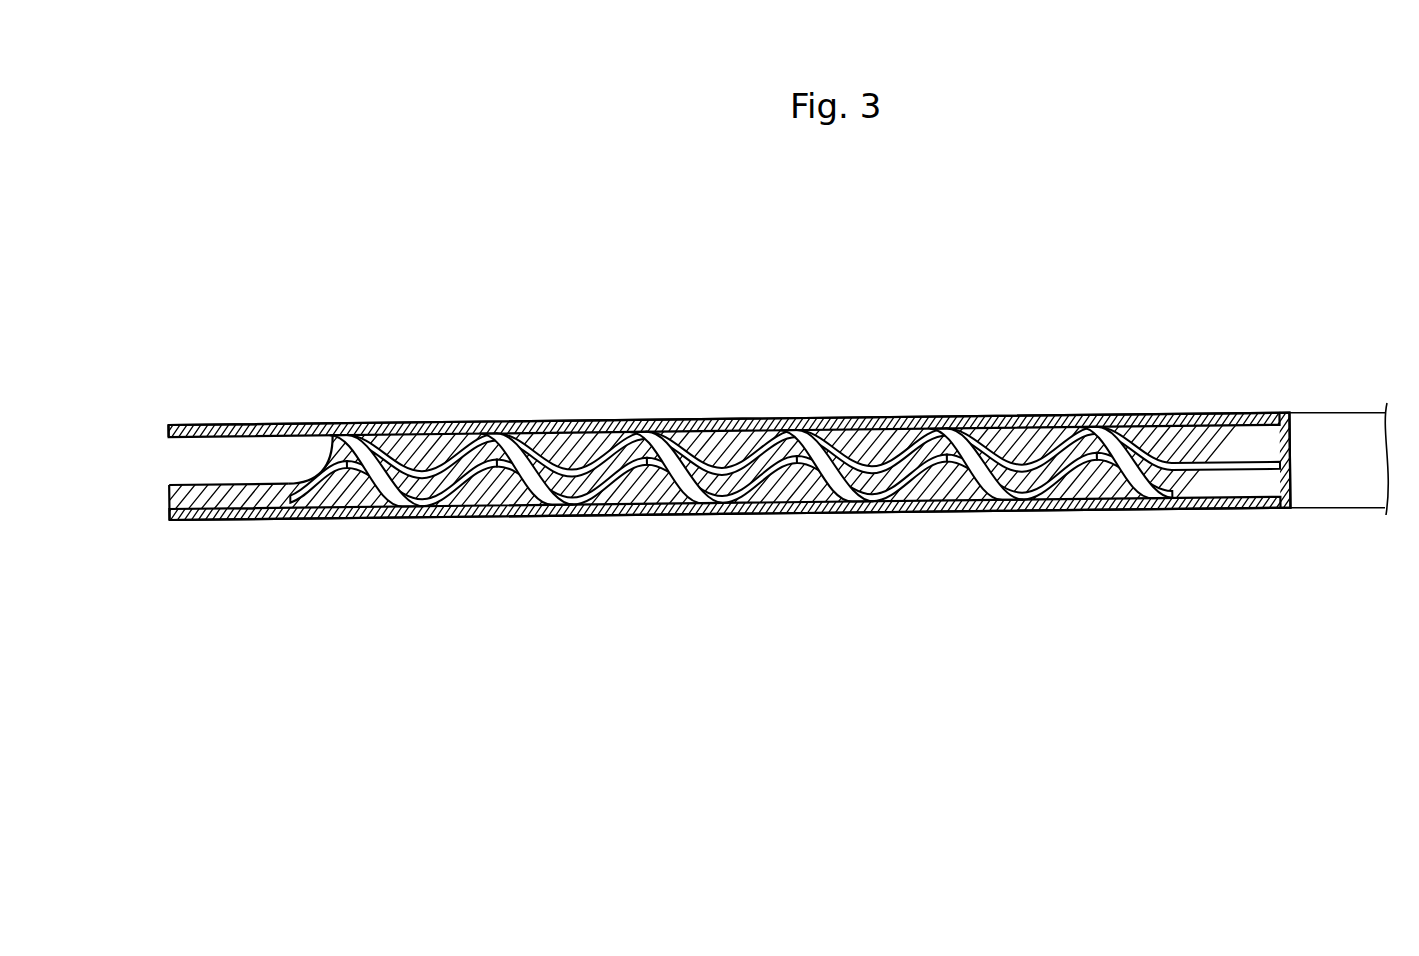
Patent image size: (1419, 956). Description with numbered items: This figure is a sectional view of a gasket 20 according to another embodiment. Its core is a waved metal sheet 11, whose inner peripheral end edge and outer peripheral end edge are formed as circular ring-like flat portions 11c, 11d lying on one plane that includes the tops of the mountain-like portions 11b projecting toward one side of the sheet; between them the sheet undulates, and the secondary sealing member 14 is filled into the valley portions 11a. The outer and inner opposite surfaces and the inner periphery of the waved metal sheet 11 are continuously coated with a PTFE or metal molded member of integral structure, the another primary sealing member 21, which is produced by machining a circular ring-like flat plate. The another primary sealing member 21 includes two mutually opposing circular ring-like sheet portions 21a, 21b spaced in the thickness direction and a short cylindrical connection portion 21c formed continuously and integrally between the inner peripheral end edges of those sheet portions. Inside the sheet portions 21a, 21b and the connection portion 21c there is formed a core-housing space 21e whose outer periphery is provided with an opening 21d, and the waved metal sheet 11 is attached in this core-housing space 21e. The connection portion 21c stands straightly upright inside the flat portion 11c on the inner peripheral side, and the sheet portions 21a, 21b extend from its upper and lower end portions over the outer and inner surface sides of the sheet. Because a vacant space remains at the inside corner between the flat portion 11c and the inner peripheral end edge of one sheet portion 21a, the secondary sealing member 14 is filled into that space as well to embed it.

The gasket 20 is at (746, 425).
The another primary sealing member 21 is at (746, 475).
The sheet portion 21a is at (422, 427).
The sheet portion 21b is at (370, 517).
The connection portion 21c is at (1291, 456).
The opening 21d is at (174, 462).
The core-housing space 21e is at (245, 450).
The waved metal sheet 11 is at (316, 456).
The valley portion 11a is at (577, 474).
The mountain-like portion 11b is at (650, 462).
The flat portion 11c is at (1220, 490).
The flat portion 11d is at (228, 521).
The secondary sealing member 14 is at (871, 447).